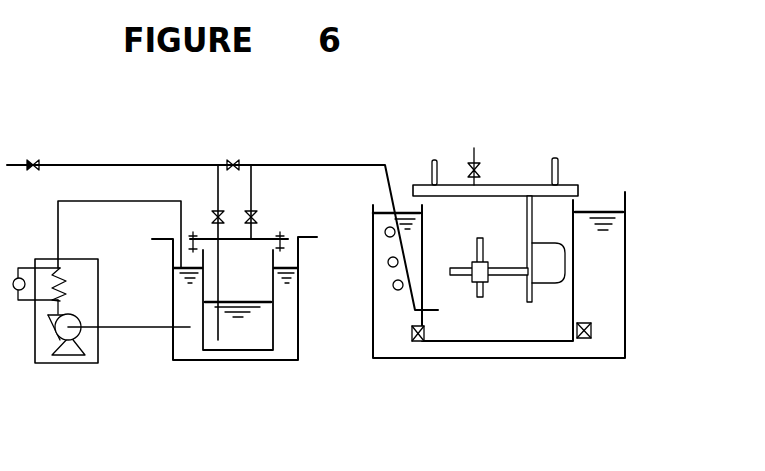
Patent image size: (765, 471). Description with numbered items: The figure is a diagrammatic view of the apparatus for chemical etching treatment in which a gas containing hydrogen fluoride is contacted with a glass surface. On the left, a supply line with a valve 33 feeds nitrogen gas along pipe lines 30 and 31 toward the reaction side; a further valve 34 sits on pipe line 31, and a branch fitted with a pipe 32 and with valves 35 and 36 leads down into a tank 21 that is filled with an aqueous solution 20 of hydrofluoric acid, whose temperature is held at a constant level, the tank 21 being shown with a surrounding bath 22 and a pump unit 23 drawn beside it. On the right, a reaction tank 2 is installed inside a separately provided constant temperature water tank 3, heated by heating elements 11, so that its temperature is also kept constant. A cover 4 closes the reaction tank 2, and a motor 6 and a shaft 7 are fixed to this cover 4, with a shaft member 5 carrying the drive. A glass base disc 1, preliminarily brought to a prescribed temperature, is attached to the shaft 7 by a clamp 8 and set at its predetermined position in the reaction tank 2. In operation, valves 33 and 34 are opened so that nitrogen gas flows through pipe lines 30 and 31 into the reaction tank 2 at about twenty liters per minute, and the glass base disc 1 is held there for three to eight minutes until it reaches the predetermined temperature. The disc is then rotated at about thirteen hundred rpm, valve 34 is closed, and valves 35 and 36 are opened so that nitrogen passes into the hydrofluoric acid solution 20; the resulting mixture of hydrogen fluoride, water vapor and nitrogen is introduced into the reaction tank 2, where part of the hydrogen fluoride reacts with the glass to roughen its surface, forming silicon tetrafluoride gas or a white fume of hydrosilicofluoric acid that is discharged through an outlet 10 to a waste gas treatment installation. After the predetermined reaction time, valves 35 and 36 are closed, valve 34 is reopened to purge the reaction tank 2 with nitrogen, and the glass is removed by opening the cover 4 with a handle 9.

The glass base disc 1 is at (480, 243).
The reaction tank 2 is at (575, 203).
The constant temperature water tank 3 is at (627, 250).
The cover 4 is at (505, 185).
The shaft 5 is at (533, 220).
The motor 6 is at (545, 265).
The shaft 7 is at (486, 268).
The clamp 8 is at (485, 282).
The handle 9 is at (560, 165).
The outlet 10 is at (478, 162).
The heater 11 is at (595, 330).
The aqueous solution of hydrofluoric acid 20 is at (240, 335).
The tank 21 is at (263, 362).
The tank 22 is at (298, 278).
The pump unit 23 is at (98, 314).
The pipe line 30 is at (110, 163).
The pipe line 31 is at (326, 161).
The pipe 32 is at (90, 201).
The valve 33 is at (34, 160).
The valve 34 is at (233, 160).
The valve 35 is at (228, 215).
The valve 36 is at (258, 216).